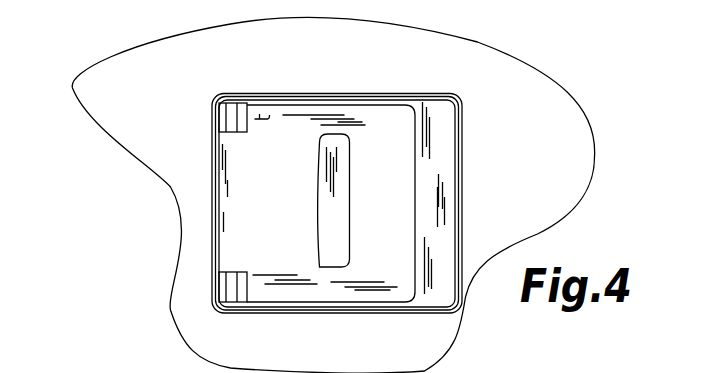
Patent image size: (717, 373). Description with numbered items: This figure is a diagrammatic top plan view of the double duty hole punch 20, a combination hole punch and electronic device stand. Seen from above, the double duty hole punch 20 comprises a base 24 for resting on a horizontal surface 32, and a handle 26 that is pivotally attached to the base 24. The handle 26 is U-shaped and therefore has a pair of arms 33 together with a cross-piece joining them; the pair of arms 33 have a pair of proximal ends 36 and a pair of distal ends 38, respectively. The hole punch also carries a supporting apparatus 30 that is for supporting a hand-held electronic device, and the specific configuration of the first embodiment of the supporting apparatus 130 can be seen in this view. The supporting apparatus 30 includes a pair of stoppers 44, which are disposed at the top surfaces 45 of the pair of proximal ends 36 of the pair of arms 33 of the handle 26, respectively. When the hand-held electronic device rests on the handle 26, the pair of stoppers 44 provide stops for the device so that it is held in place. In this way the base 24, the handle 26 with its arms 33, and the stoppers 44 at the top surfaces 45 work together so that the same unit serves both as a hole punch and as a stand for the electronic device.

The double duty hole punch 20 is at (121, 171).
The base 24 is at (471, 123).
The handle 26 is at (397, 99).
The supporting apparatus 30 is at (231, 98).
The supporting apparatus 130 is at (189, 94).
The horizontal surface 32 is at (251, 57).
The pair of arms 33 is at (296, 128).
The pair of proximal ends 36 is at (244, 137).
The pair of distal ends 38 is at (328, 290).
The pair of stoppers 44 is at (212, 115).
The top surfaces 45 is at (270, 112).